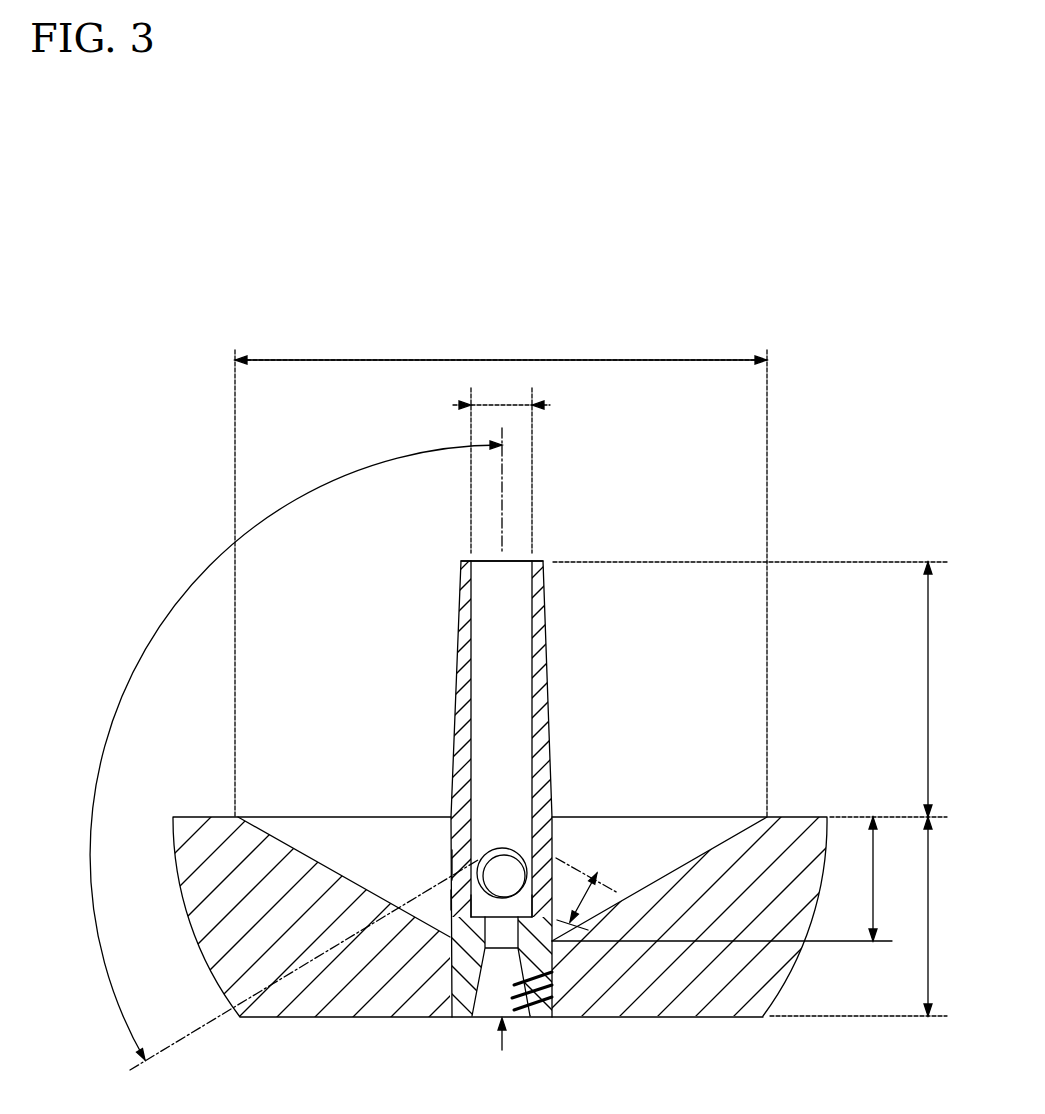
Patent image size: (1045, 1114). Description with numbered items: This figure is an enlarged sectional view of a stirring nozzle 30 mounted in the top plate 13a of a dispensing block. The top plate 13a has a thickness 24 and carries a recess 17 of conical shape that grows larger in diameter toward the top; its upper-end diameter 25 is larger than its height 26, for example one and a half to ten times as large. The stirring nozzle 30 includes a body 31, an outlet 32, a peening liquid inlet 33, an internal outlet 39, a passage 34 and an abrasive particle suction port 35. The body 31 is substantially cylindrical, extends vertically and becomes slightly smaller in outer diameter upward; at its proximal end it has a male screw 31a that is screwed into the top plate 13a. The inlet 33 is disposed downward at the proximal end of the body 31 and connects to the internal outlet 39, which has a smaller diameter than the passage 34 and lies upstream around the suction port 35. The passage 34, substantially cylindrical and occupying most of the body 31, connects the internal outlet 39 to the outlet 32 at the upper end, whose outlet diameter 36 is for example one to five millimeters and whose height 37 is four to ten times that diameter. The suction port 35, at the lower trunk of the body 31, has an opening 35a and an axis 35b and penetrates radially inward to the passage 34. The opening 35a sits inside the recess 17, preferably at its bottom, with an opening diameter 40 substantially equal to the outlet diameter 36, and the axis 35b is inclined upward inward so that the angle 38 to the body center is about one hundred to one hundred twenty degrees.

The top plate 13a is at (810, 817).
The recess 17 is at (690, 862).
The thickness 24 is at (928, 895).
The diameter 25 is at (501, 571).
The height 26 is at (873, 895).
The stirring nozzle 30 is at (510, 784).
The body 31 is at (548, 690).
The male screw 31a is at (553, 987).
The outlet 32 is at (532, 561).
The peening liquid inlet 33 is at (530, 1020).
The passage 34 is at (533, 637).
The abrasive particle suction port 35 is at (512, 870).
The opening 35a is at (452, 862).
The axis 35b is at (440, 898).
The outlet diameter 36 is at (501, 463).
The height 37 is at (928, 708).
The angle 38 is at (158, 632).
The internal outlet 39 is at (486, 862).
The opening diameter 40 is at (583, 903).